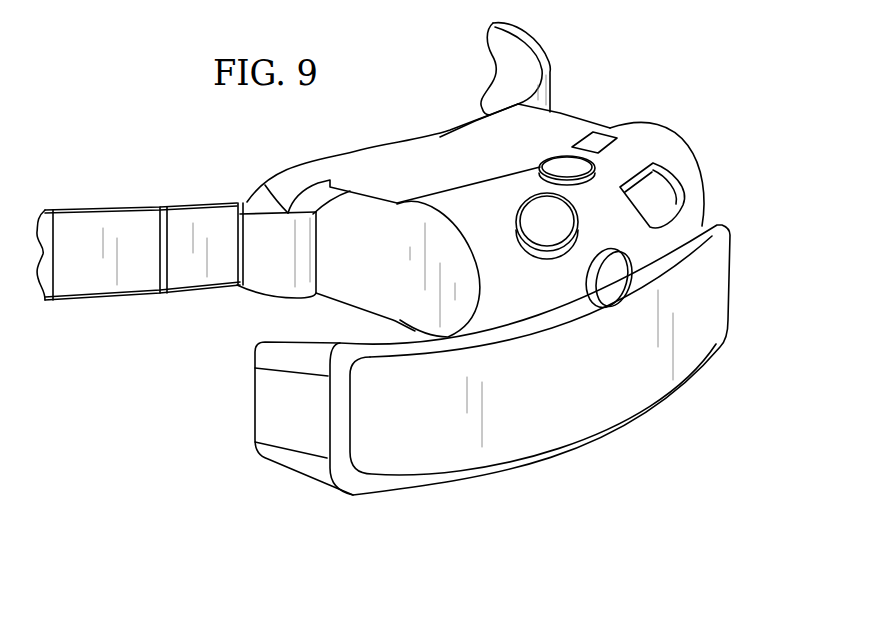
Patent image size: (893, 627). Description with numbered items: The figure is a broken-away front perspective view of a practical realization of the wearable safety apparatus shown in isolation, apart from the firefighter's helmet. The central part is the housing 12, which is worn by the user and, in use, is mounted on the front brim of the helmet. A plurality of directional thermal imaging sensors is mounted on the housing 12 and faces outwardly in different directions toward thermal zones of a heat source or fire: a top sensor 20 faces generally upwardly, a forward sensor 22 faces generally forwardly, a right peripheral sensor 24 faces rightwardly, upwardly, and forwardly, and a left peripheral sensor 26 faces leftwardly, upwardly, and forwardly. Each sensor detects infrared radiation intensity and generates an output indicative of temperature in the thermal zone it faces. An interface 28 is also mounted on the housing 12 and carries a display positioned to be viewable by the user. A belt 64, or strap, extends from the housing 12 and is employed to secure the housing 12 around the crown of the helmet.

The housing 12 is at (660, 133).
The top sensor 20 is at (563, 165).
The forward sensor 22 is at (612, 293).
The right peripheral sensor 24 is at (533, 222).
The left peripheral sensor 26 is at (672, 177).
The interface 28 is at (517, 438).
The belt 64 is at (97, 273).